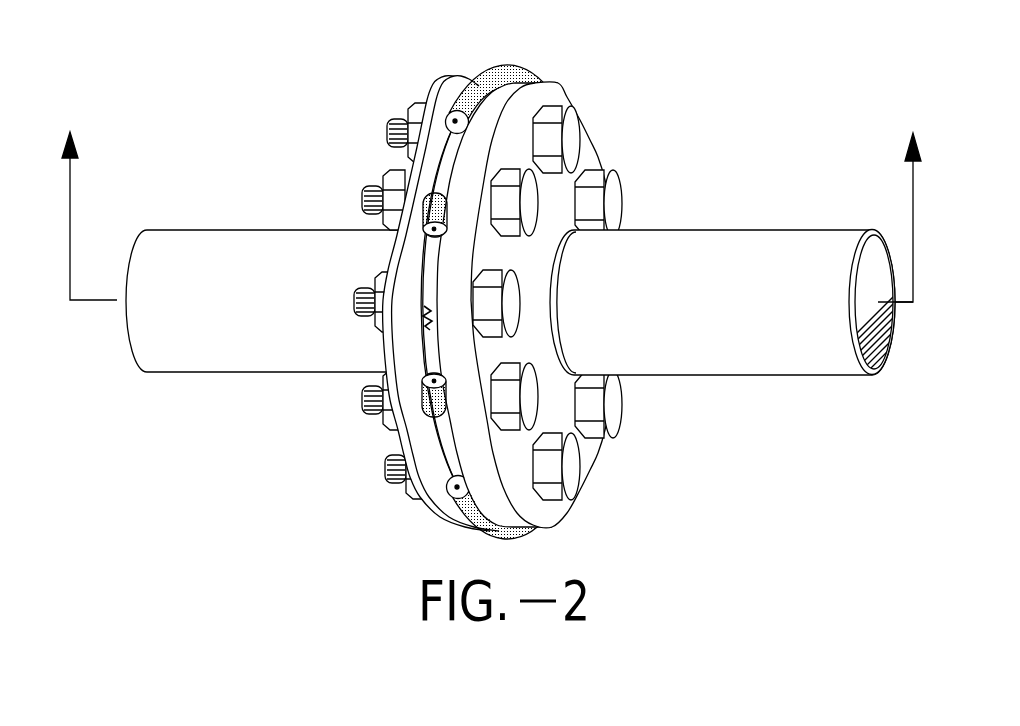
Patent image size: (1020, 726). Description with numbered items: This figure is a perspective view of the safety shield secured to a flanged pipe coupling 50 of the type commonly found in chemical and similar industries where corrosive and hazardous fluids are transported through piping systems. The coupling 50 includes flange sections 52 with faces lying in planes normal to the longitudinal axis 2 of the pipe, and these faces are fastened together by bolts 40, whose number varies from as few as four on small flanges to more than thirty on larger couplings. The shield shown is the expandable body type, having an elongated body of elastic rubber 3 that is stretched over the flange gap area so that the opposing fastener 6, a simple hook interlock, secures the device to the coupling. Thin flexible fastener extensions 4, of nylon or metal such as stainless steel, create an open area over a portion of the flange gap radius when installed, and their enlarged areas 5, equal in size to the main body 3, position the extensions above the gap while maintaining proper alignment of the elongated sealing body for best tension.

The longitudinal axis 2 is at (489, 197).
The elongated body of elastic rubber 3 is at (490, 75).
The fastener extensions 4 is at (433, 160).
The enlarged areas 5 is at (424, 215).
The opposing fastener 6 is at (413, 316).
The flange bolts 40 is at (566, 146).
The flanged pipe coupling 50 is at (482, 284).
The flange sections 52 is at (436, 102).